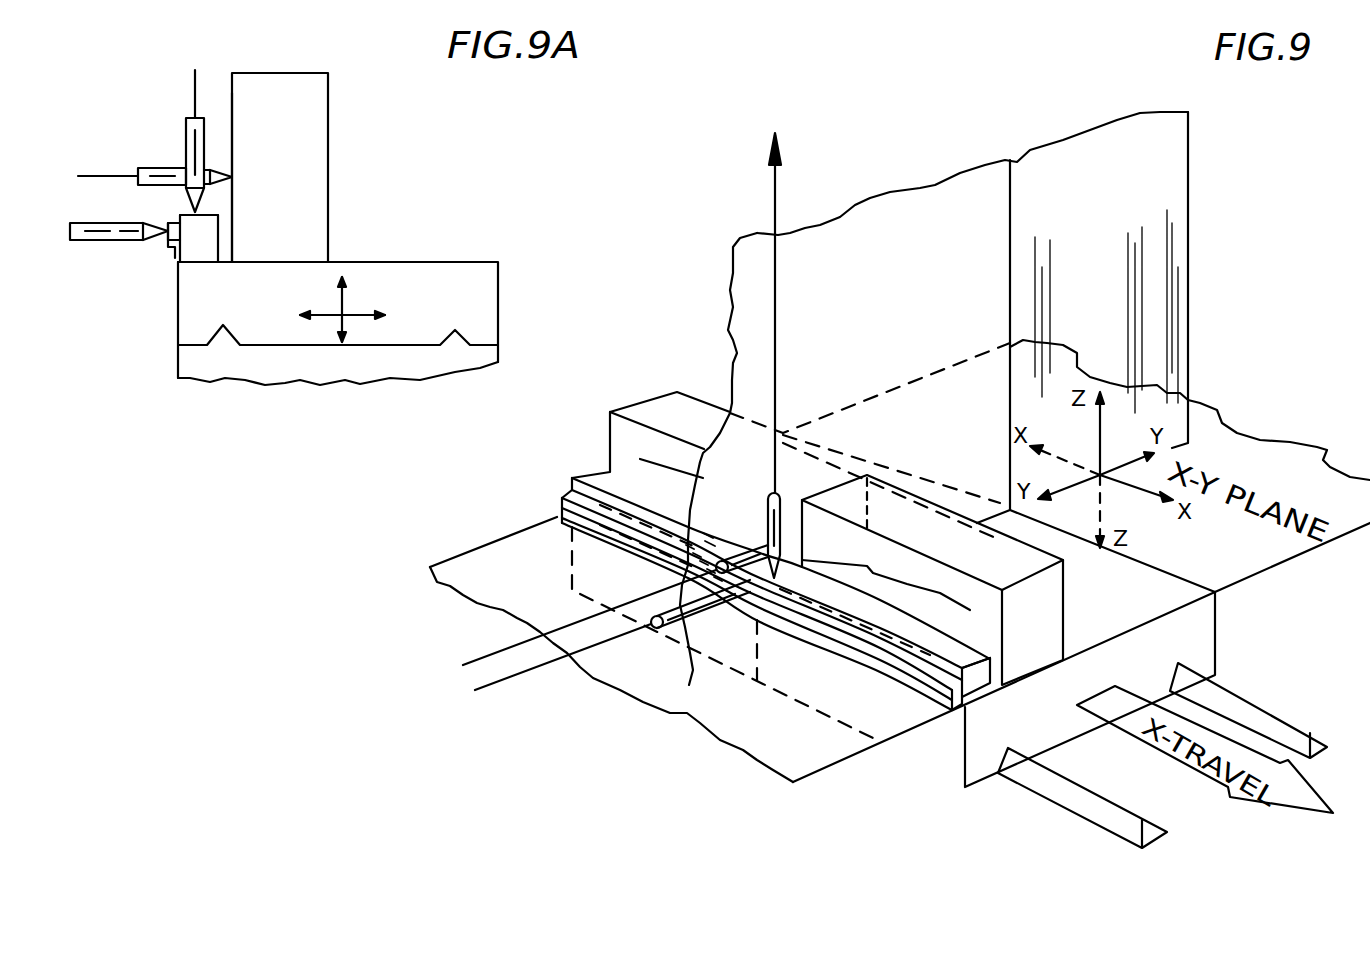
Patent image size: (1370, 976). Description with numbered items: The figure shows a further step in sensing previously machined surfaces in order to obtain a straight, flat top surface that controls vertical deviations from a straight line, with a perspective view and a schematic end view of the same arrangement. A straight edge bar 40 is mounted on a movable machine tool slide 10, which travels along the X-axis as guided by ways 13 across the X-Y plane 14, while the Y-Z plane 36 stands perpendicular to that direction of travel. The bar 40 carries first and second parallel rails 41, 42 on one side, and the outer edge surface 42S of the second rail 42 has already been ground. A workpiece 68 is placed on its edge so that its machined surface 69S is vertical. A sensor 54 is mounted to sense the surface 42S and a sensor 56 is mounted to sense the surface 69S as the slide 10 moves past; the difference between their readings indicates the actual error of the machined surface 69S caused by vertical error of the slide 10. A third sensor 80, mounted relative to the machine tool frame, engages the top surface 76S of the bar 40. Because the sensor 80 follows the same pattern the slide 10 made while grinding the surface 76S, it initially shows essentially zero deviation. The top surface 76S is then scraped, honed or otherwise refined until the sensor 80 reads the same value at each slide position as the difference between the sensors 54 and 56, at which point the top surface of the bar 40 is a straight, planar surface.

In FIG. 9A, the machine tool slide 10 is at (485, 320).
In FIG. 9, the machine tool slide 10 is at (1195, 645).
In FIG. 9, the ways 13 is at (1087, 810).
In FIG. 9, the X-Y plane surface 14 is at (1277, 555).
In FIG. 9, the Y-Z plane 36 is at (1167, 187).
In FIG. 9A, the bar 40 is at (207, 235).
In FIG. 9, the bar 40 is at (982, 680).
In FIG. 9A, the first rail 41 is at (177, 262).
In FIG. 9A, the second rail 42 is at (175, 223).
In FIG. 9, the second rail 42 is at (967, 697).
In FIG. 9A, the edge surface 42S is at (160, 243).
In FIG. 9, the edge surface 42S is at (930, 677).
In FIG. 9A, the sensor 54 is at (118, 240).
In FIG. 9, the sensor 54 is at (703, 606).
In FIG. 9A, the sensor 56 is at (157, 168).
In FIG. 9, the sensor 56 is at (733, 557).
In FIG. 9A, the workpiece 68 is at (310, 95).
In FIG. 9, the workpiece 68 is at (1053, 598).
In FIG. 9A, the surface 69S is at (232, 93).
In FIG. 9, the surface 69S is at (627, 445).
In FIG. 9A, the top surface 76S is at (222, 218).
In FIG. 9, the top surface 76S is at (972, 660).
In FIG. 9A, the third sensor 80 is at (187, 127).
In FIG. 9, the third sensor 80 is at (780, 517).